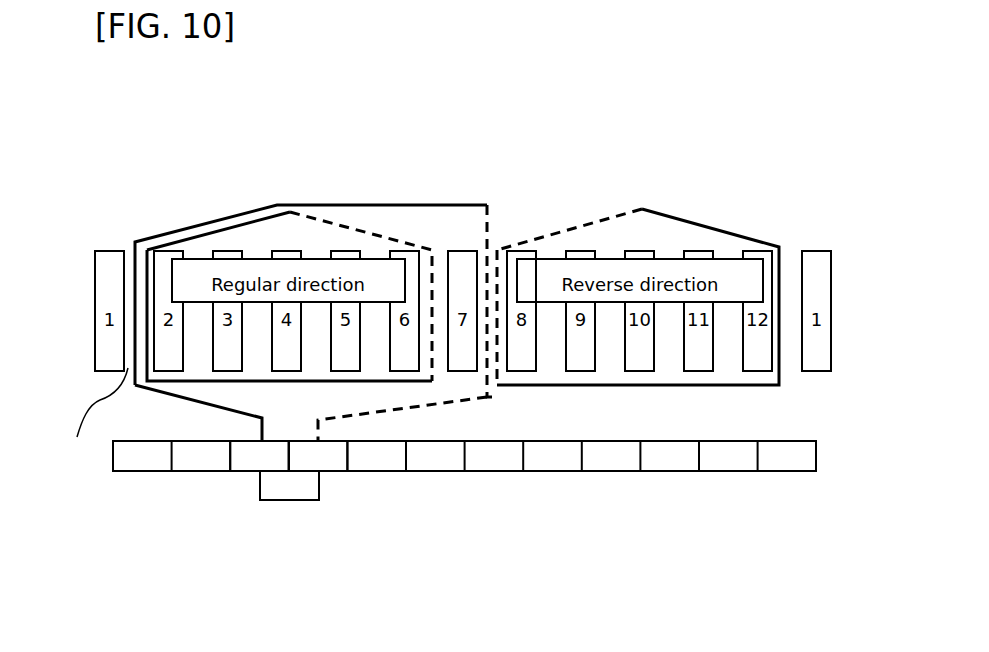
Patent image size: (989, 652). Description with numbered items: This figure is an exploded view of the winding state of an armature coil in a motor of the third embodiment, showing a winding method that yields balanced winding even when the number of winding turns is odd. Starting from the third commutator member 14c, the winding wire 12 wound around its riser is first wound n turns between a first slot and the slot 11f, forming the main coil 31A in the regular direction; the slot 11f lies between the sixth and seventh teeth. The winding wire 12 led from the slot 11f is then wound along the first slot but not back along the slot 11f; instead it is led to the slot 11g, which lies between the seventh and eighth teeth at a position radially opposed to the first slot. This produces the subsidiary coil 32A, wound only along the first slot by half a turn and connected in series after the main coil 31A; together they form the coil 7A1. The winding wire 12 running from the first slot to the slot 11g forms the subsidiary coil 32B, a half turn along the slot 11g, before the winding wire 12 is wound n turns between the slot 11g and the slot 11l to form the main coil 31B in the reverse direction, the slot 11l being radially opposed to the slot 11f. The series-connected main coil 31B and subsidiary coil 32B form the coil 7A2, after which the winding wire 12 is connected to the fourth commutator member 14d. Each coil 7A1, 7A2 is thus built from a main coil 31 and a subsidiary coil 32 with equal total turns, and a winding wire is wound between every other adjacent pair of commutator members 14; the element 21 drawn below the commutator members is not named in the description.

The coil 7A1 is at (285, 238).
The coil 7A2 is at (589, 261).
The main coil 31 is at (289, 243).
The main coil 31A is at (273, 212).
The main coil 31B is at (670, 213).
The subsidiary coil 32 is at (285, 265).
The subsidiary coil 32A is at (133, 248).
The subsidiary coil 32B is at (492, 246).
The slot 11f is at (443, 258).
The slot 11g is at (502, 387).
The slot 11l is at (789, 258).
The winding wire 12 is at (198, 400).
The commutator member 14 is at (448, 504).
The third commutator member 14c is at (250, 465).
The fourth commutator member 14d is at (333, 467).
The connecting member 21 is at (283, 495).